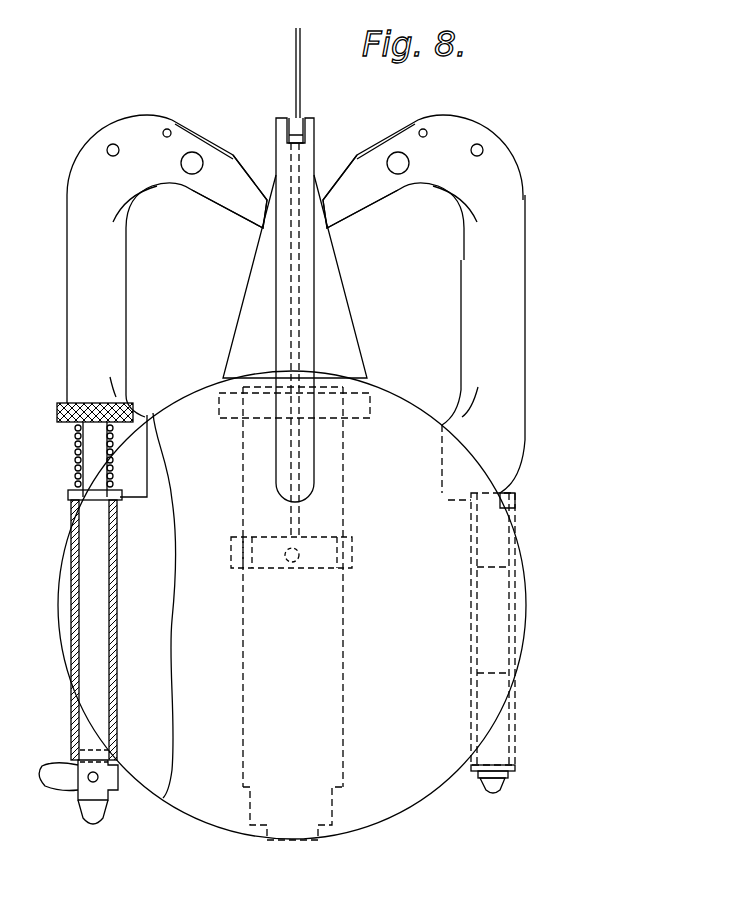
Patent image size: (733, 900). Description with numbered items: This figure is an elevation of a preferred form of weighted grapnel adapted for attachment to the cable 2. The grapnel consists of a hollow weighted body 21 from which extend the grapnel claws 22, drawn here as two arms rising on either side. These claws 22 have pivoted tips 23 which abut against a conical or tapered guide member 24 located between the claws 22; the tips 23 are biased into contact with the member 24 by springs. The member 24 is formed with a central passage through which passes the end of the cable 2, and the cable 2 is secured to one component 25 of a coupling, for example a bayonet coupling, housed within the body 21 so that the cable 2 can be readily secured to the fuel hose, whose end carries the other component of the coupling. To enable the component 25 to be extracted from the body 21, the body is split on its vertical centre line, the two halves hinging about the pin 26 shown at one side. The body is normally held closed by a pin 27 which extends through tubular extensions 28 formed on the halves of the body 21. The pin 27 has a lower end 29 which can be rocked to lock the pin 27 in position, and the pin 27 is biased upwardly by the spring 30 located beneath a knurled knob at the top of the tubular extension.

The cable 2 is at (300, 58).
The hollow weighted body 21 is at (413, 793).
The grapnel claws 22 is at (72, 318).
The pivoted tips 23 is at (220, 197).
The conical or tapered guide member 24 is at (338, 318).
The coupling component 25 is at (325, 540).
The pin 26 is at (500, 725).
The pin 27 is at (87, 723).
The tubular extensions 28 is at (75, 553).
The lower end 29 is at (68, 780).
The spring 30 is at (77, 453).